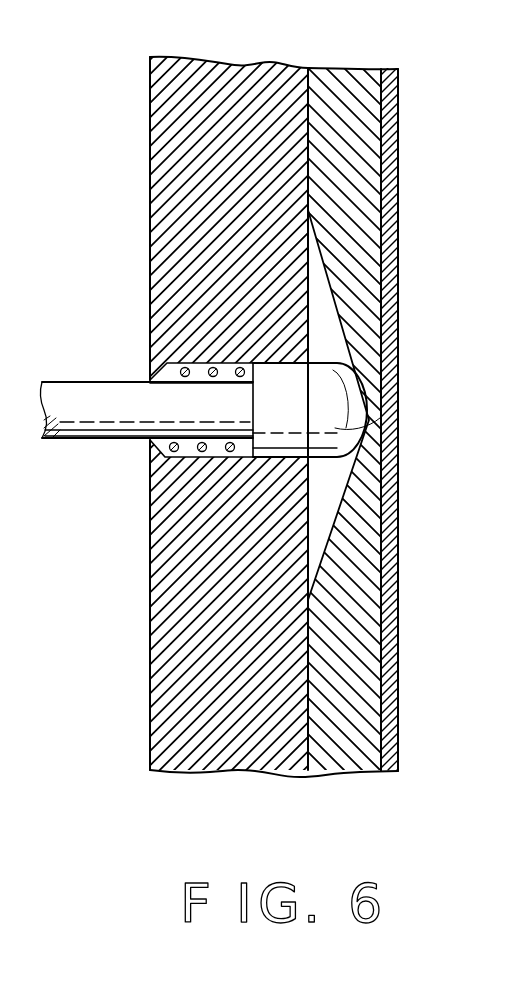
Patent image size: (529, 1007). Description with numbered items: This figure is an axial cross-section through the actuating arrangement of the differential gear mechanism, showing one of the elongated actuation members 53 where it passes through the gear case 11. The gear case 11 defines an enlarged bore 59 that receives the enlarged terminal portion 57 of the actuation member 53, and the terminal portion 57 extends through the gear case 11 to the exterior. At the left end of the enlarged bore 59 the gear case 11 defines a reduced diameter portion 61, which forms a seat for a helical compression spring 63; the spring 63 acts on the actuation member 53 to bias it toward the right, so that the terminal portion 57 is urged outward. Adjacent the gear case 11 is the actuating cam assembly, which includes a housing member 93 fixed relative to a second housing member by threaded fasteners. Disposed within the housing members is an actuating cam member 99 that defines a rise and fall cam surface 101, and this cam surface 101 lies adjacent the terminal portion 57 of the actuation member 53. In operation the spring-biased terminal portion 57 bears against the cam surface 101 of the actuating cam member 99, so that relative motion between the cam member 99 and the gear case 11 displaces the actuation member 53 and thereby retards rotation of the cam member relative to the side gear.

The gear case 11 is at (232, 103).
The actuation member 53 is at (120, 403).
The terminal portion 57 is at (380, 418).
The enlarged bore 59 is at (283, 363).
The reduced diameter portion 61 is at (150, 450).
The helical compression spring 63 is at (232, 385).
The housing member 93 is at (390, 485).
The actuating cam member 99 is at (340, 152).
The rise and fall cam surface 101 is at (333, 298).